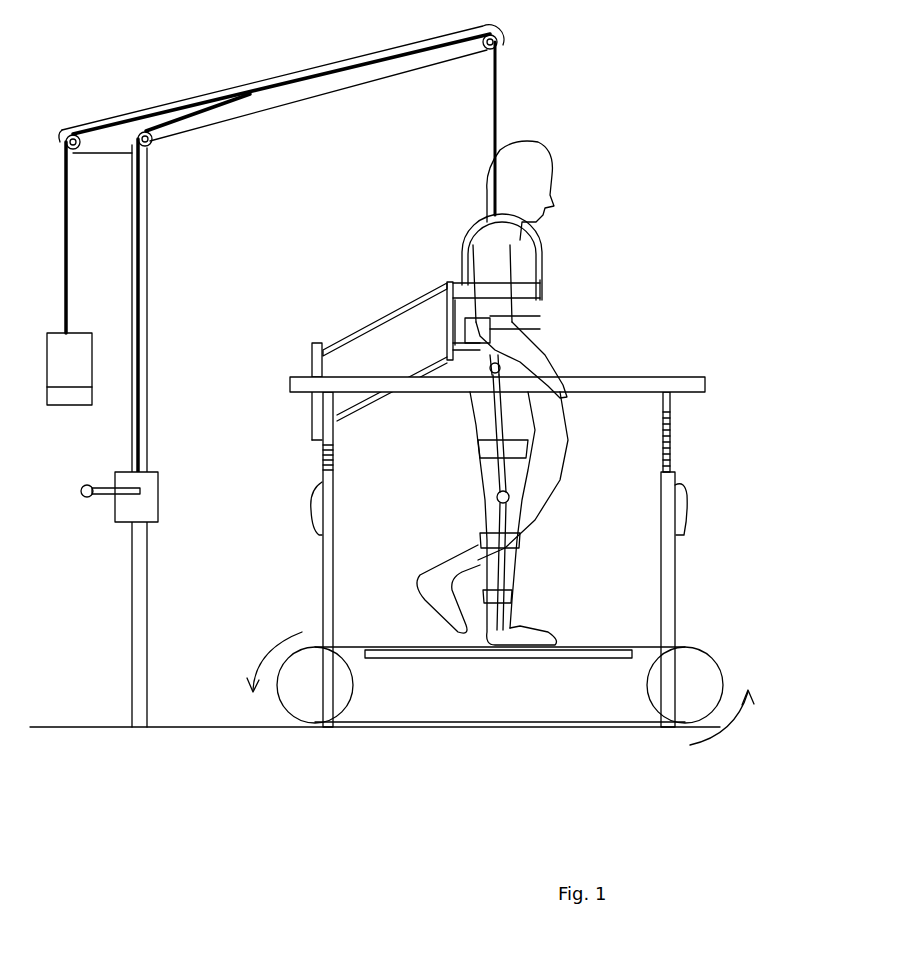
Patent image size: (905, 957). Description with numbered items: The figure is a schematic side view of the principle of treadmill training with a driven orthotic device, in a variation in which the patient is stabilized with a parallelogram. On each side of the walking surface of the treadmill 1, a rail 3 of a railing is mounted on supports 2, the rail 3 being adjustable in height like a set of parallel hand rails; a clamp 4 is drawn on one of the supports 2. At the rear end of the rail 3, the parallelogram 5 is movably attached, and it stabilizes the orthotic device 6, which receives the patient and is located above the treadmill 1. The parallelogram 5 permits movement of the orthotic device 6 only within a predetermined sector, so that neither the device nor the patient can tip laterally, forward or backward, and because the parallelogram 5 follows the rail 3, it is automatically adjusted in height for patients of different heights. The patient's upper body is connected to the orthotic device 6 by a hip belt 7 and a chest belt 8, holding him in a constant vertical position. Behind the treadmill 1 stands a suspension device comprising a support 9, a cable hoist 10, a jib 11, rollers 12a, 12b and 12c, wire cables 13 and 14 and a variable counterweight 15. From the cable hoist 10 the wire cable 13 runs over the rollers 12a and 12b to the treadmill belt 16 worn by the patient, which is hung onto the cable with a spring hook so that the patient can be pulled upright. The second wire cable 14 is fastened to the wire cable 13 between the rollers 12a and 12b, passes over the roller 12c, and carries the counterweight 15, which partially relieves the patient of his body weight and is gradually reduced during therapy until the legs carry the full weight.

The treadmill 1 is at (436, 707).
The supports 2 is at (668, 598).
The rail 3 is at (640, 380).
The clamping lever 4 is at (680, 488).
The parallelogram 5 is at (372, 312).
The orthotic device 6 is at (445, 279).
The hip belt 7 is at (472, 355).
The chest belt 8 is at (545, 293).
The support 9 is at (147, 638).
The cable hoist 10 is at (158, 502).
The jib 11 is at (328, 88).
The roller 12a is at (150, 147).
The roller 12b is at (499, 47).
The roller 12c is at (73, 133).
The wire cable 13 is at (277, 92).
The second wire cable 14 is at (70, 258).
The counterweight 15 is at (80, 345).
The treadmill belt 16 is at (540, 252).